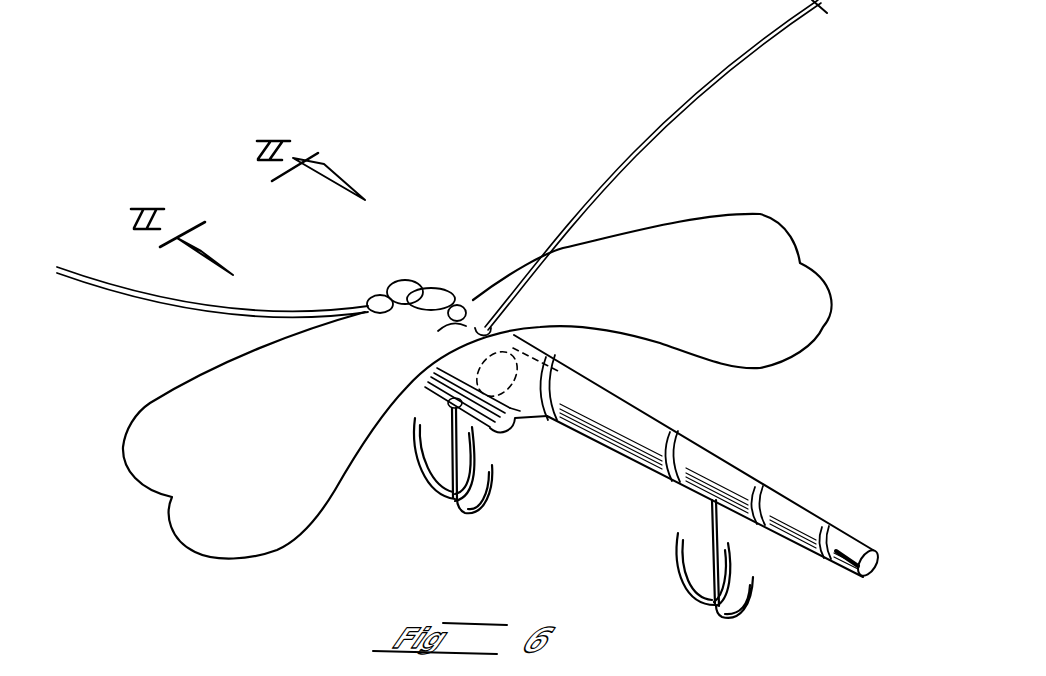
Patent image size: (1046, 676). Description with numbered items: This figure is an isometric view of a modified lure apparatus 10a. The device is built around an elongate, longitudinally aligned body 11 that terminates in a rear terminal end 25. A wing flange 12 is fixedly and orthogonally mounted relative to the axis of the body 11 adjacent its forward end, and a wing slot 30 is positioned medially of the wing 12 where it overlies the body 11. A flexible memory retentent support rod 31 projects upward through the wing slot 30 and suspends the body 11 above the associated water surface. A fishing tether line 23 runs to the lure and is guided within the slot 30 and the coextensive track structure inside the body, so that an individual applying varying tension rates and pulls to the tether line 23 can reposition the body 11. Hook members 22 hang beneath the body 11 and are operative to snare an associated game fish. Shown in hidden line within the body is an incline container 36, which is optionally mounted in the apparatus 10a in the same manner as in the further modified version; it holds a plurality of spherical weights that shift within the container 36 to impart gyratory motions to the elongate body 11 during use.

The modified lure apparatus 10a is at (810, 137).
The elongate body 11 is at (647, 427).
The wing flange 12 is at (290, 520).
The hook members 22 is at (445, 503).
The fishing tether line 23 is at (270, 310).
The rear terminal end 25 is at (877, 560).
The wing slot 30 is at (450, 337).
The flexible memory retentent support rod 31 is at (593, 200).
The incline container 36 is at (553, 356).